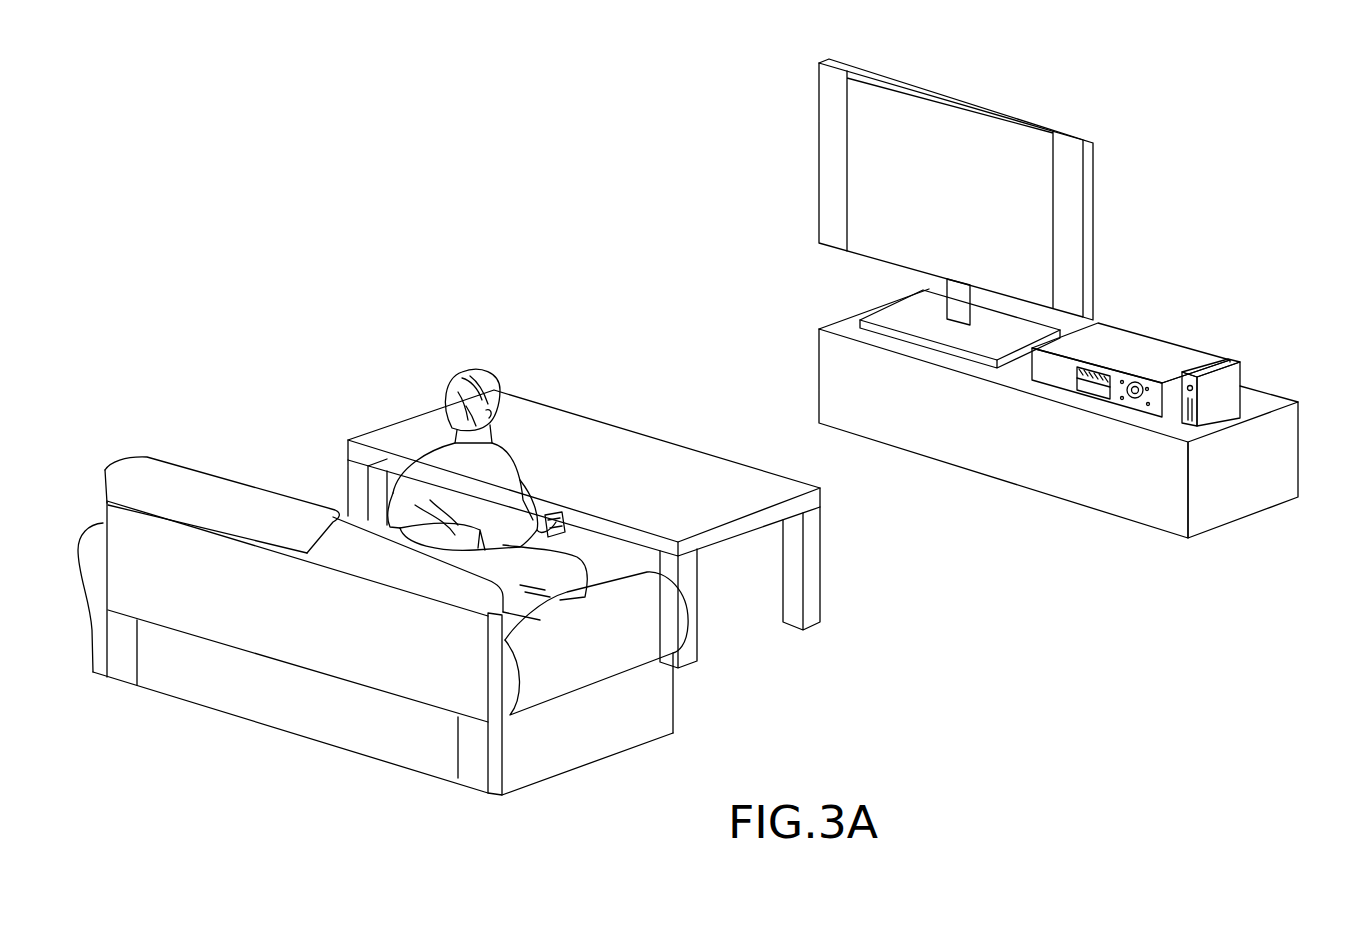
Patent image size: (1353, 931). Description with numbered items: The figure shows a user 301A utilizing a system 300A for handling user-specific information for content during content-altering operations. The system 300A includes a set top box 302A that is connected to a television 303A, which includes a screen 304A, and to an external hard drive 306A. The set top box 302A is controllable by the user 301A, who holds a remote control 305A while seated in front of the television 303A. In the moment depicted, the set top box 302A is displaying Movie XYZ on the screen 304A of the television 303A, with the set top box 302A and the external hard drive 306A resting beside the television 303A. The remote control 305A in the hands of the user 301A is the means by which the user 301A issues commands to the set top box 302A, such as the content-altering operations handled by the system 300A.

The system 300A is at (549, 102).
The user 301A is at (452, 376).
The set top box 302A is at (1117, 332).
The television 303A is at (1088, 207).
The screen 304A is at (1032, 133).
The remote control 305A is at (567, 530).
The external hard drive 306A is at (1220, 363).